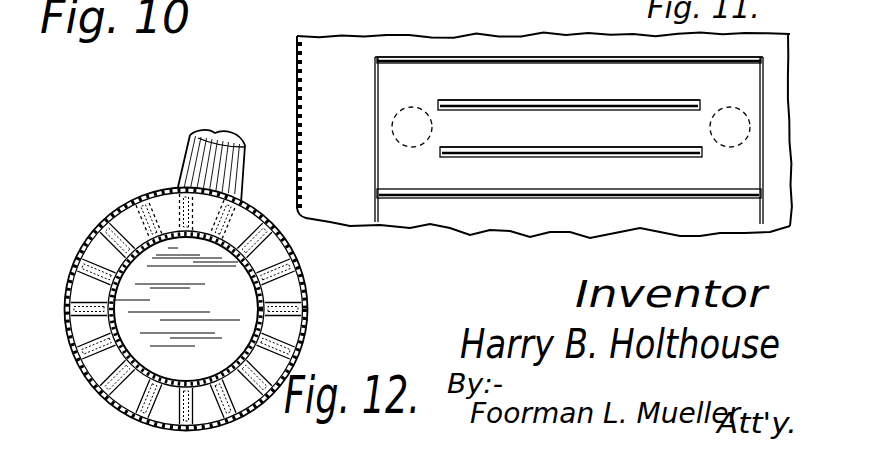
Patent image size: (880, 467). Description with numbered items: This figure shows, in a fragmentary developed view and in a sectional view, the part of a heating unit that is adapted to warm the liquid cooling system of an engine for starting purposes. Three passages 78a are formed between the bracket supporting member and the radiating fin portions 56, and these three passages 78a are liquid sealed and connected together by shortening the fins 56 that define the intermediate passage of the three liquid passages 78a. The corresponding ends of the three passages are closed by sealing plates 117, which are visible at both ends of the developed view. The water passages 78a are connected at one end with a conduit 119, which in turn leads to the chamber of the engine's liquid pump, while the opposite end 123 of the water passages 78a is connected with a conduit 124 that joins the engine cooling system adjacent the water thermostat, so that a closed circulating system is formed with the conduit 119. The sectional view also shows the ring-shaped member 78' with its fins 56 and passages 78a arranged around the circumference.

In FIG. 11, the radiating fin portions 56 is at (662, 63).
In FIG. 12, the mandrel ring 78' is at (208, 309).
In FIG. 11, the liquid passages 78a is at (608, 91).
In FIG. 12, the liquid passages 78a is at (243, 221).
In FIG. 11, the sealing plates 117 is at (375, 120).
In FIG. 12, the sealing plates 117 is at (162, 202).
In FIG. 11, the conduit 119 is at (732, 148).
In FIG. 11, the opposite end of the water passages 123 is at (397, 68).
In FIG. 11, the conduit 124 is at (398, 141).